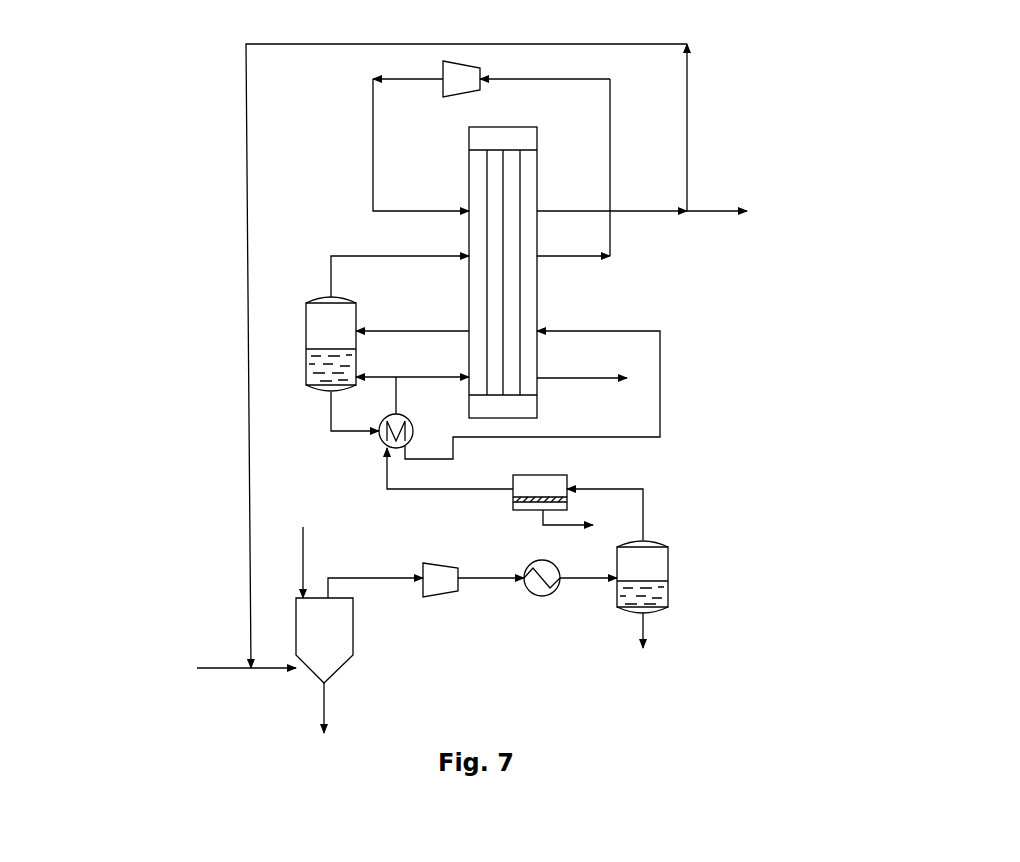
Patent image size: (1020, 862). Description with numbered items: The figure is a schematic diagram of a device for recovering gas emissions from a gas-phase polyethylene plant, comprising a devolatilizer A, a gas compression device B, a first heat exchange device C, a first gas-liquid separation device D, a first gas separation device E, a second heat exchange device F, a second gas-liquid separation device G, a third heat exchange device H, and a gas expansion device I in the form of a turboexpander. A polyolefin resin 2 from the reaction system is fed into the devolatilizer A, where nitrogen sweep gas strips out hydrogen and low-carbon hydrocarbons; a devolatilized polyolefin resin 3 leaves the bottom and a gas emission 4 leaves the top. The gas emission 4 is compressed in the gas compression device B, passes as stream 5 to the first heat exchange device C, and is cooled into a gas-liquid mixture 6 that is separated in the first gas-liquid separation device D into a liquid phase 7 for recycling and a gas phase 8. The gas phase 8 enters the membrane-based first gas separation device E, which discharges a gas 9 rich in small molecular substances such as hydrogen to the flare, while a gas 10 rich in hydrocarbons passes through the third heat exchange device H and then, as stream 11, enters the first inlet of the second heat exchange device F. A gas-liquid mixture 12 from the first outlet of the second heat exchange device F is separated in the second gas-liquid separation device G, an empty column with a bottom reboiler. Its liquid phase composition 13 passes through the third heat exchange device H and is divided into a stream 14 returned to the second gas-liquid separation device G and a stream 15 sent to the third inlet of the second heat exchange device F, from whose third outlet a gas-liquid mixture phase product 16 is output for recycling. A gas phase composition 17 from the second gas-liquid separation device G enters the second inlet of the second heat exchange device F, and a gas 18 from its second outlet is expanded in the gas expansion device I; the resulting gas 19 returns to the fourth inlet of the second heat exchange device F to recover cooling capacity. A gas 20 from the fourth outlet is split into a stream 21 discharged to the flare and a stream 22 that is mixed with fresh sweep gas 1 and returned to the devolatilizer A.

The fresh sweep gas 1 is at (238, 668).
The polyolefin resin 2 is at (303, 545).
The polyolefin resin 3 is at (324, 718).
The gas emission 4 is at (375, 578).
The compressed stream to heat exchanger C 5 is at (503, 578).
The gas-liquid mixture 6 is at (600, 578).
The liquid phase 7 is at (643, 640).
The gas phase 8 is at (613, 489).
The gas rich in small molecular substances 9 is at (578, 525).
The gas rich in hydrocarbons 10 is at (425, 489).
The stream from mixer H to reactor F 11 is at (660, 378).
The gas-liquid mixture 12 is at (452, 331).
The liquid phase composition 13 is at (344, 431).
The stream 14 is at (387, 377).
The stream 15 is at (448, 377).
The gas-liquid mixture phase product 16 is at (601, 378).
The gas phase composition 17 is at (435, 256).
The gas 18 is at (593, 256).
The gas 19 is at (442, 211).
The gas 20 is at (645, 211).
The stream 21 is at (731, 211).
The stream 22 is at (505, 43).
The devolatilizer A is at (353, 628).
The gas compression device B is at (440, 563).
The first heat exchange device C is at (537, 561).
The first gas-liquid separation device D is at (668, 573).
The first gas separation device E is at (537, 475).
The second heat exchange device F is at (537, 316).
The second gas-liquid separation device G is at (306, 312).
The third heat exchange device H is at (413, 427).
The gas expansion device I is at (466, 97).